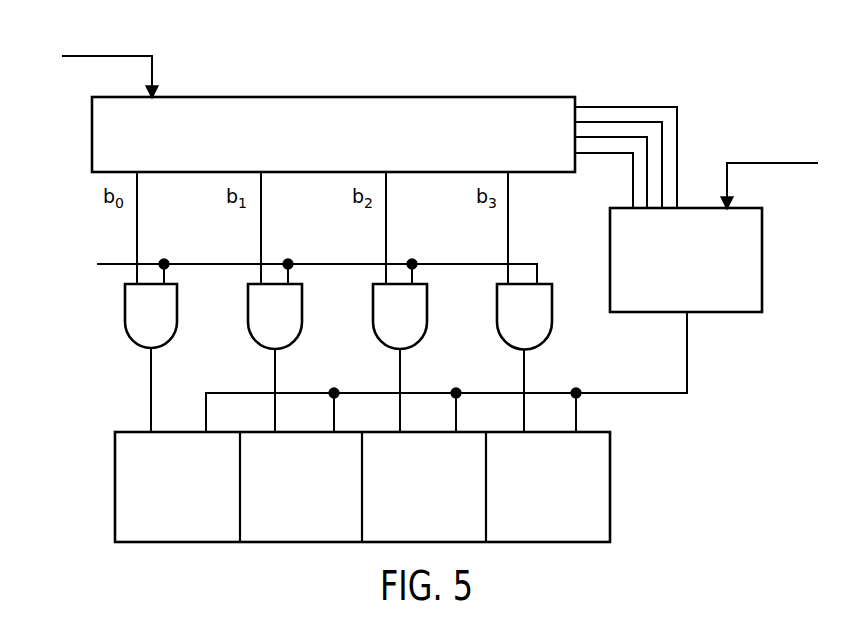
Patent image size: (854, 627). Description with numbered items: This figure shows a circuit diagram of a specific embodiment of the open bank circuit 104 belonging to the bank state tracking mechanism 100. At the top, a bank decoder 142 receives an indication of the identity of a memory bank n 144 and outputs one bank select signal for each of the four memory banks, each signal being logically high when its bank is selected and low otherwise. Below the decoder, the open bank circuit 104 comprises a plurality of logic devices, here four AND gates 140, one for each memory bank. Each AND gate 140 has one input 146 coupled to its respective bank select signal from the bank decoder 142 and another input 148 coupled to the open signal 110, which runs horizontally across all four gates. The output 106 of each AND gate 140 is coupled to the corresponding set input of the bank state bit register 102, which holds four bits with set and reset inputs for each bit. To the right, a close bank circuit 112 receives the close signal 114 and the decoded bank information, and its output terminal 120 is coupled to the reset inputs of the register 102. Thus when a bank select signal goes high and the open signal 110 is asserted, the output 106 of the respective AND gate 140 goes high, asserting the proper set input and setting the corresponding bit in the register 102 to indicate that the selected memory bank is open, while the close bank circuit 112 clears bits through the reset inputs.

The bank state tracking mechanism 100 is at (652, 80).
The bank state bit register 102 is at (115, 490).
The open bank circuit 104 is at (96, 380).
The output terminal 106 is at (152, 390).
The open signal 110 is at (46, 244).
The close bank circuit 112 is at (762, 268).
The close signal 114 is at (762, 162).
The output terminal 120 is at (687, 355).
The AND gate 140 is at (137, 323).
The bank decoder 142 is at (455, 97).
The memory bank n indication 144 is at (110, 52).
The input 146 is at (130, 278).
The input 148 is at (168, 276).